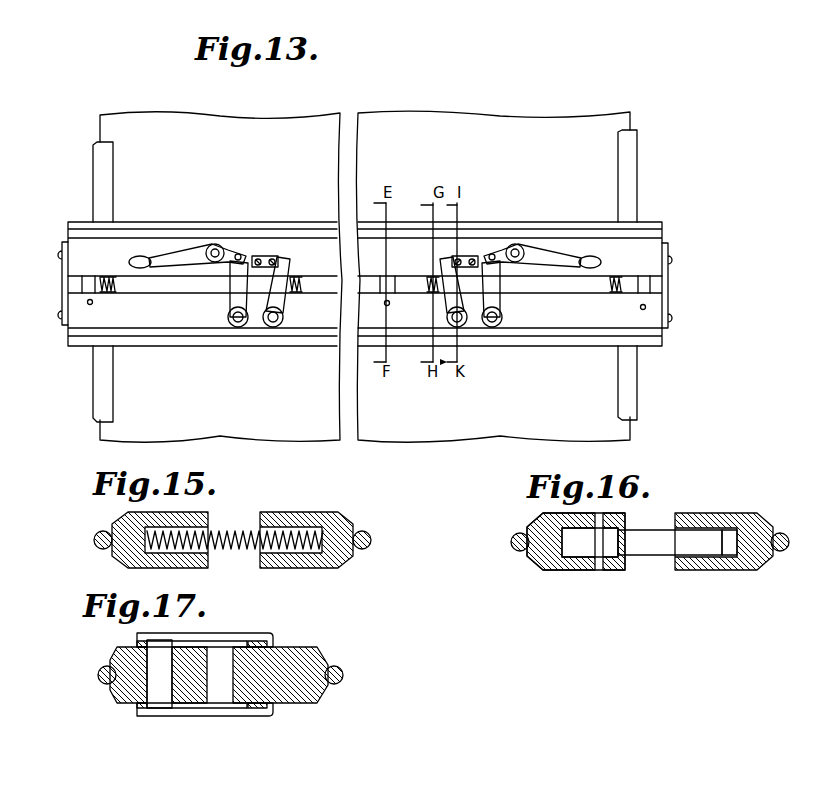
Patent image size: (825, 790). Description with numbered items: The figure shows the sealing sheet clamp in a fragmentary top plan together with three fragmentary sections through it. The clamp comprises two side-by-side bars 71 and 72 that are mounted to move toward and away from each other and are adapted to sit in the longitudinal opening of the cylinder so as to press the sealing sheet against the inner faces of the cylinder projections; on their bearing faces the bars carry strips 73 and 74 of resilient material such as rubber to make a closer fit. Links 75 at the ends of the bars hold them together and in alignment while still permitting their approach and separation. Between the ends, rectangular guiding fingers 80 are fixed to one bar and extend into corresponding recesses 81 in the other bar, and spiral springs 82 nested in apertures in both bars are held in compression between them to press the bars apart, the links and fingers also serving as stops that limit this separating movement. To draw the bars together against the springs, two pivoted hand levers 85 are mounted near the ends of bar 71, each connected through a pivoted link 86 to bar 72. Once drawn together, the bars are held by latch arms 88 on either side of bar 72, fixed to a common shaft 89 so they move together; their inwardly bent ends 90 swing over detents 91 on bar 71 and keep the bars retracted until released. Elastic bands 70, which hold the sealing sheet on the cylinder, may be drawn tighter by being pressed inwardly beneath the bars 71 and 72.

In FIG. 13, the elastic bands 70 is at (88, 157).
In FIG. 13, the bar 71 is at (645, 253).
In FIG. 17, the bar 71 is at (300, 657).
In FIG. 13, the bar 72 is at (638, 322).
In FIG. 17, the bar 72 is at (120, 697).
In FIG. 17, the strip of resilient material 73 is at (342, 677).
In FIG. 17, the strip of resilient material 74 is at (100, 677).
In FIG. 13, the links 75 is at (62, 283).
In FIG. 13, the rectangular guiding fingers 80 is at (87, 283).
In FIG. 16, the rectangular guiding fingers 80 is at (652, 528).
In FIG. 16, the recesses 81 is at (730, 548).
In FIG. 15, the spiral springs 82 is at (225, 532).
In FIG. 13, the pivoted hand levers 85 is at (172, 257).
In FIG. 13, the pivoted link 86 is at (233, 290).
In FIG. 13, the latch arms 88 is at (283, 300).
In FIG. 17, the latch arms 88 is at (212, 633).
In FIG. 17, the shaft 89 is at (157, 693).
In FIG. 17, the inwardly bent ends 90 is at (273, 638).
In FIG. 13, the detents 91 is at (260, 257).
In FIG. 17, the detents 91 is at (257, 642).